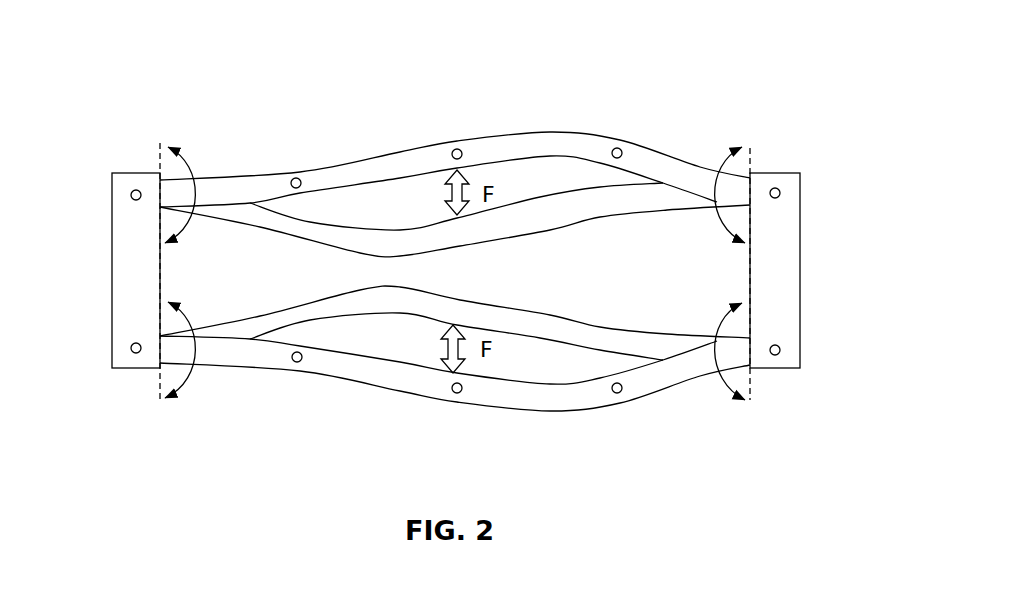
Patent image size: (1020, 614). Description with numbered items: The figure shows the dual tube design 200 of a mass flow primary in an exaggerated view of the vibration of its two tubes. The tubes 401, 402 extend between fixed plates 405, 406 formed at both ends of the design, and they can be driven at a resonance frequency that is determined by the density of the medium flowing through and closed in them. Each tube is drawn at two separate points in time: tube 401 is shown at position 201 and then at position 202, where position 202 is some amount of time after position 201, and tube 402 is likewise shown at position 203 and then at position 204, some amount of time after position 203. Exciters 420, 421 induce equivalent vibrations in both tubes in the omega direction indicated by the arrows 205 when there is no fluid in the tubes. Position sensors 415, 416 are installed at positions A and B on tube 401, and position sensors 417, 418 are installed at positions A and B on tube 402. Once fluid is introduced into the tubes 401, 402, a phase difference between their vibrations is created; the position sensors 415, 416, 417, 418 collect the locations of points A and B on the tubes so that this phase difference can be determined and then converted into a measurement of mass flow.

The dual tube design 200 is at (133, 40).
The position of tube 401 at first time 201 is at (418, 144).
The position of tube 401 at later time 202 is at (408, 220).
The position of tube 402 at first time 203 is at (513, 412).
The position of tube 402 at later time 204 is at (537, 305).
The vibration direction indicator 205 is at (176, 145).
The tube 401 is at (307, 240).
The tube 402 is at (318, 322).
The fixed plate 405 is at (107, 270).
The fixed plate 406 is at (816, 258).
The position sensor 415 is at (299, 178).
The position sensor 416 is at (613, 149).
The position sensor 417 is at (301, 362).
The position sensor 418 is at (614, 393).
The exciter 420 is at (458, 148).
The exciter 421 is at (455, 393).